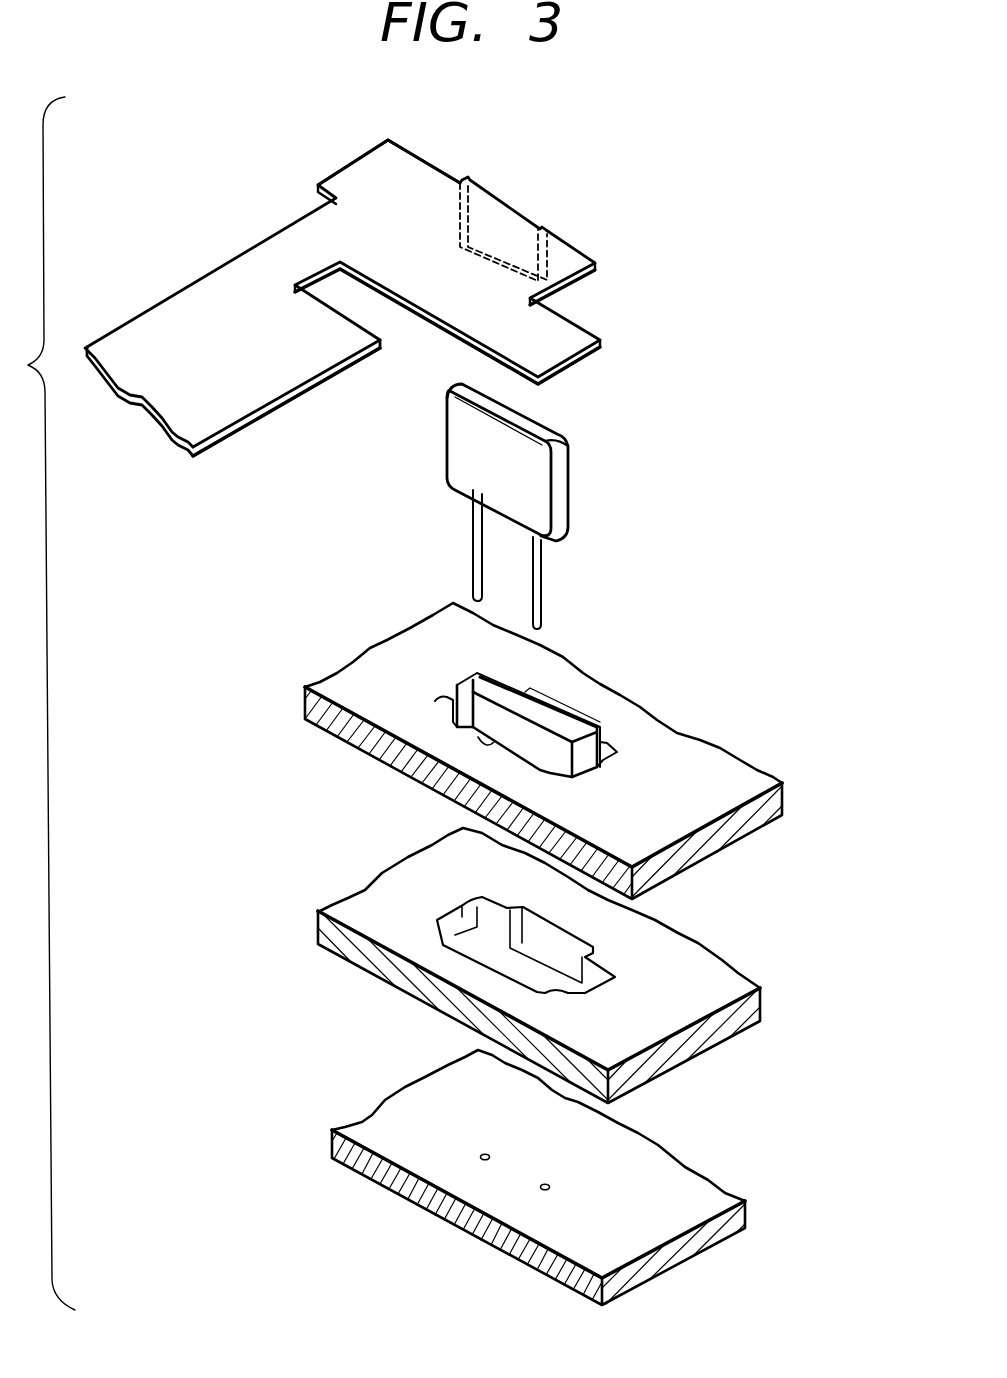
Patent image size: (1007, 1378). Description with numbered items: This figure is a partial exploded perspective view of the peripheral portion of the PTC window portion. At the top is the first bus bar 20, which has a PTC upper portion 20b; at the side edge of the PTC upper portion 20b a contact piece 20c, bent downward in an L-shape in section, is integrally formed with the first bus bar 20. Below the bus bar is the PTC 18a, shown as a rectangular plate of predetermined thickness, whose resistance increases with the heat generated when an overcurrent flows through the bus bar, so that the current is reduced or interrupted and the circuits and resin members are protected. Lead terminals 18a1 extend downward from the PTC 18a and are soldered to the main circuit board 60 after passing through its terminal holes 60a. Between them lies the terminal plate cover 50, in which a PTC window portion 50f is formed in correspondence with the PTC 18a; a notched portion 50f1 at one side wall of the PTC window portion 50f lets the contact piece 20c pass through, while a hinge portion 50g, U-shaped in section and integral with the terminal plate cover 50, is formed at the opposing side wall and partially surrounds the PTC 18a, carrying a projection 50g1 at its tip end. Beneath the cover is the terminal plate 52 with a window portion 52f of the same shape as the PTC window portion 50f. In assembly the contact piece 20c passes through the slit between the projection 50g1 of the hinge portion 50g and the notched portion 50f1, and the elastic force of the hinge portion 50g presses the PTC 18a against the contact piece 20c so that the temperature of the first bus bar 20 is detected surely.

The first bus bar 20 is at (580, 333).
The PTC upper portion 20b is at (400, 163).
The contact piece 20c is at (506, 229).
The PTC 18a is at (563, 467).
The lead terminals 18a1 is at (540, 565).
The terminal plate cover 50 is at (707, 812).
The PTC window portion 50f is at (440, 700).
The notched portion 50f1 is at (482, 741).
The hinge portion 50g is at (593, 757).
The projection 50g1 is at (525, 722).
The terminal plate 52 is at (678, 962).
The window portion 52f is at (460, 918).
The main circuit board 60 is at (650, 1167).
The terminal holes 60a is at (541, 1187).